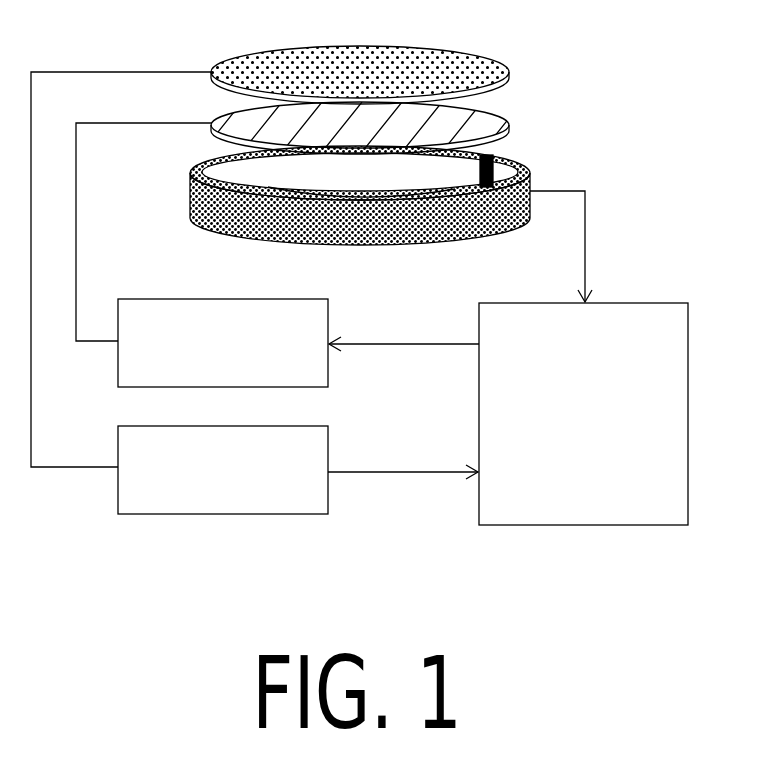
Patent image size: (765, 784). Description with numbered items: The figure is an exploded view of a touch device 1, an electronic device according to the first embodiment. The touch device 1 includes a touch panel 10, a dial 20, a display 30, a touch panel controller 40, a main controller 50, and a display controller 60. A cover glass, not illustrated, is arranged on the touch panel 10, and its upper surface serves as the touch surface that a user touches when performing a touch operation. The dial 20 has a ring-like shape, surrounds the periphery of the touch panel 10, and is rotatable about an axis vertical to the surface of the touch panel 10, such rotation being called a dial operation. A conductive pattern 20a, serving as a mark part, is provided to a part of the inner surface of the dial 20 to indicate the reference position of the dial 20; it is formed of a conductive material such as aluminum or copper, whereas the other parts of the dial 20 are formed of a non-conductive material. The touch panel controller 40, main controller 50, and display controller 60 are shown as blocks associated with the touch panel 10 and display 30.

The touch device 1 is at (438, 32).
The touch panel 10 is at (510, 74).
The display 30 is at (510, 127).
The dial 20 is at (507, 225).
The conductive pattern 20a is at (493, 169).
The touch panel controller 40 is at (292, 426).
The main controller 50 is at (651, 303).
The display controller 60 is at (292, 299).